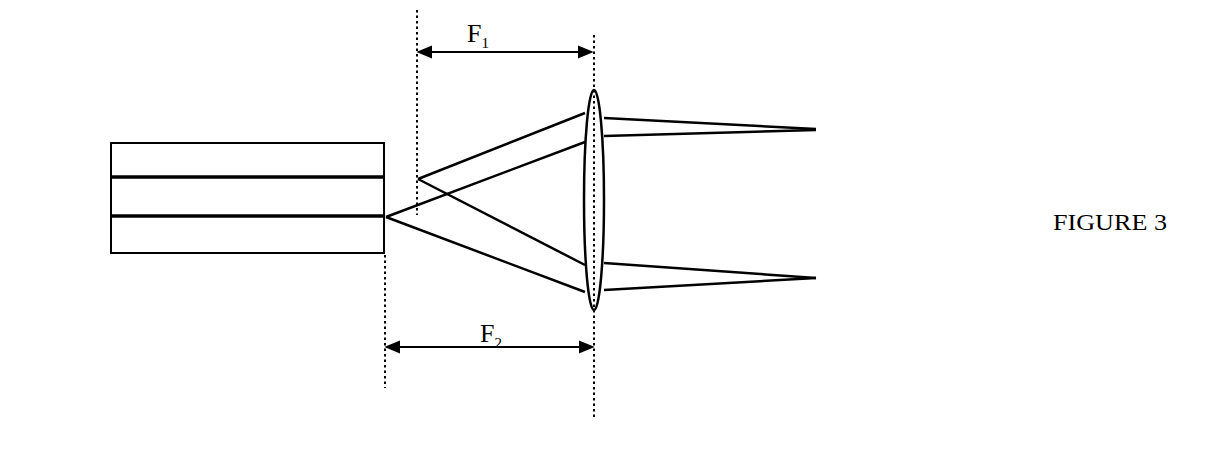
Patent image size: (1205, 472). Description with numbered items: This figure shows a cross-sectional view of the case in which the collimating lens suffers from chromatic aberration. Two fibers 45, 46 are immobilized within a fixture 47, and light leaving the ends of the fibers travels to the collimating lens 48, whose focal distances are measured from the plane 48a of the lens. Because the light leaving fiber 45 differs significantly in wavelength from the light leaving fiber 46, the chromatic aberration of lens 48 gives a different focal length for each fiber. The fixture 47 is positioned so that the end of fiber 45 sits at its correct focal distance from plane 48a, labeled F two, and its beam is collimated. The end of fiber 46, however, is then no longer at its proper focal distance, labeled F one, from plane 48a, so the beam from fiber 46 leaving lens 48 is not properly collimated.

The fiber 45 is at (165, 217).
The fiber 46 is at (182, 174).
The fixture 47 is at (285, 253).
The collimating lens 48 is at (606, 197).
The plane 48a is at (598, 388).